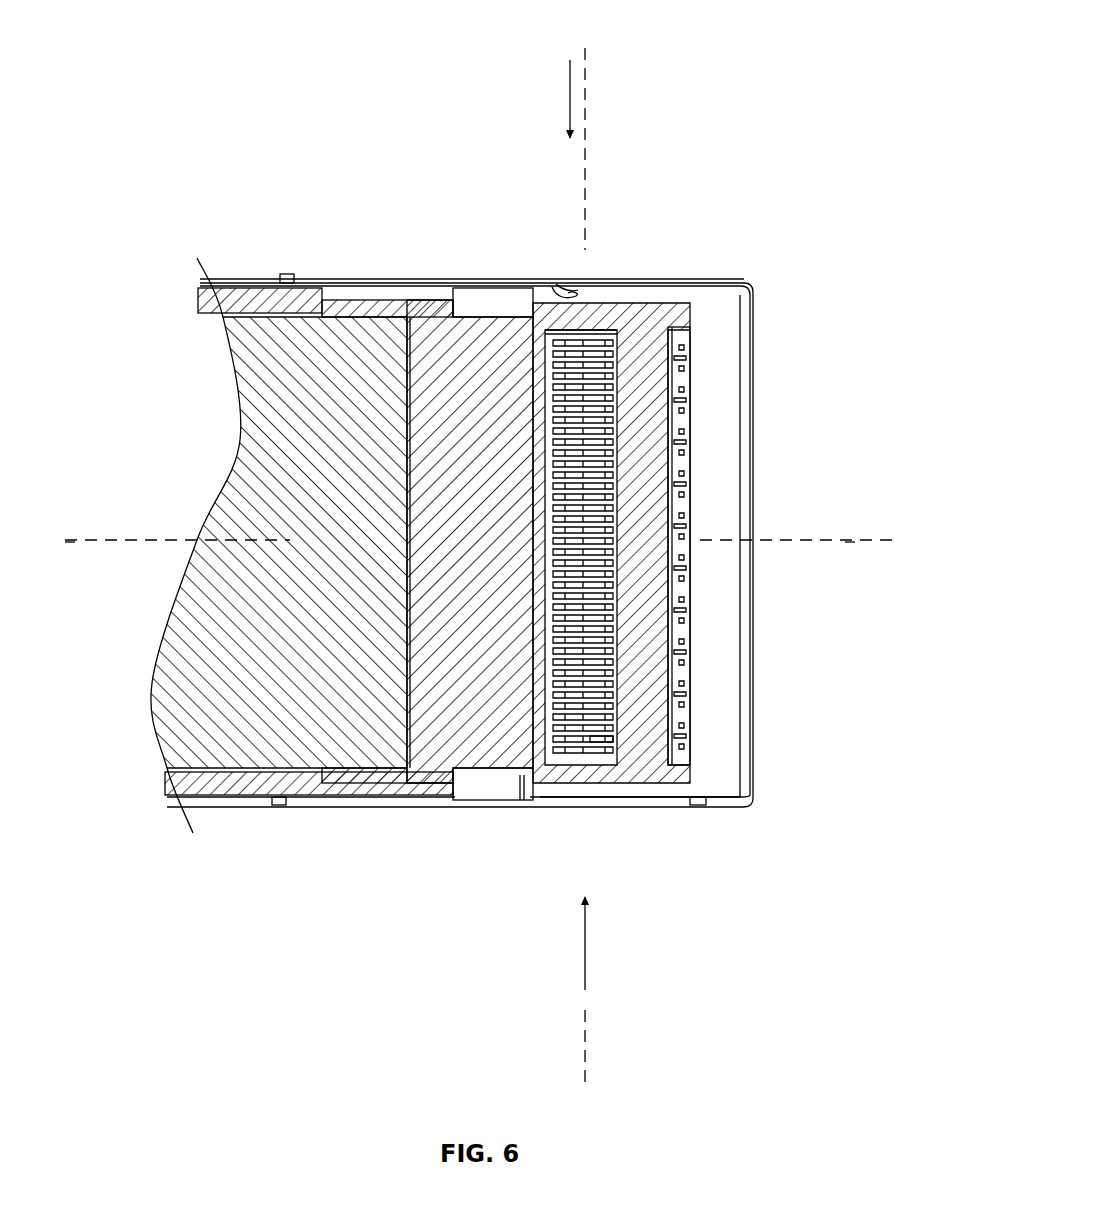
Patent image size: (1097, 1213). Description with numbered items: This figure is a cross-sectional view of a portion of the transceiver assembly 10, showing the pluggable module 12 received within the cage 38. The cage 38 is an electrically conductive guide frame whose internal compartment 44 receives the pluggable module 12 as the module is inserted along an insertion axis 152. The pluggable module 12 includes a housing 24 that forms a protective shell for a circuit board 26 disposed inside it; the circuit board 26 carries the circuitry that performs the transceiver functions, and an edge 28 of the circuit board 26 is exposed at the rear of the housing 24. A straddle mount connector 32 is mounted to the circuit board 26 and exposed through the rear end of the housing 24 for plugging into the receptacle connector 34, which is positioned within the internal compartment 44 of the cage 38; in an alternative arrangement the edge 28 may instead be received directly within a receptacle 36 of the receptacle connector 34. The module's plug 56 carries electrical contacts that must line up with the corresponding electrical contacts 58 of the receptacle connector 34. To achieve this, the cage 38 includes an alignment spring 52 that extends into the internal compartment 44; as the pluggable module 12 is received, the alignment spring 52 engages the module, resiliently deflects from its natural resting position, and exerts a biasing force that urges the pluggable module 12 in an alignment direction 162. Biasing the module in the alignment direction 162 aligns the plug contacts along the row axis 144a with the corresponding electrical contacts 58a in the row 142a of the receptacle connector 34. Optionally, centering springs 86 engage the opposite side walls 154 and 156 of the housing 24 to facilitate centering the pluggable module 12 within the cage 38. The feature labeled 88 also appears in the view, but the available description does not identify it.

The transceiver assembly 10 is at (796, 50).
The pluggable module 12 is at (236, 300).
The housing 24 is at (247, 790).
The circuit board 26 is at (226, 666).
The edge 28 is at (376, 790).
The straddle mount connector 32 is at (436, 322).
The receptacle connector 34 is at (658, 518).
The receptacle 36 is at (602, 330).
The cage 38 is at (605, 808).
The internal compartment 44 is at (543, 294).
The alignment spring 52 is at (557, 289).
The plug 56 is at (509, 346).
The electrical contacts 58 is at (600, 692).
The electrical contacts 58a is at (602, 742).
The centering springs 86 is at (347, 298).
The centerline reference 88 is at (66, 542).
The row 142a is at (598, 960).
The row axis 144a is at (598, 138).
The insertion axis 152 is at (70, 540).
The side wall 154 is at (282, 285).
The side wall 156 is at (280, 800).
The alignment direction 162 is at (568, 102).